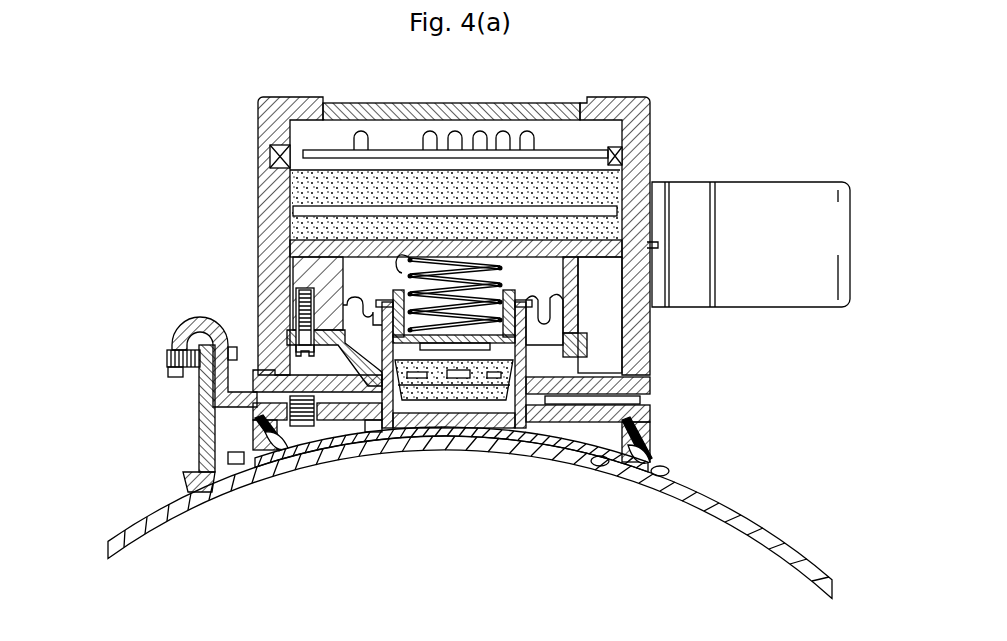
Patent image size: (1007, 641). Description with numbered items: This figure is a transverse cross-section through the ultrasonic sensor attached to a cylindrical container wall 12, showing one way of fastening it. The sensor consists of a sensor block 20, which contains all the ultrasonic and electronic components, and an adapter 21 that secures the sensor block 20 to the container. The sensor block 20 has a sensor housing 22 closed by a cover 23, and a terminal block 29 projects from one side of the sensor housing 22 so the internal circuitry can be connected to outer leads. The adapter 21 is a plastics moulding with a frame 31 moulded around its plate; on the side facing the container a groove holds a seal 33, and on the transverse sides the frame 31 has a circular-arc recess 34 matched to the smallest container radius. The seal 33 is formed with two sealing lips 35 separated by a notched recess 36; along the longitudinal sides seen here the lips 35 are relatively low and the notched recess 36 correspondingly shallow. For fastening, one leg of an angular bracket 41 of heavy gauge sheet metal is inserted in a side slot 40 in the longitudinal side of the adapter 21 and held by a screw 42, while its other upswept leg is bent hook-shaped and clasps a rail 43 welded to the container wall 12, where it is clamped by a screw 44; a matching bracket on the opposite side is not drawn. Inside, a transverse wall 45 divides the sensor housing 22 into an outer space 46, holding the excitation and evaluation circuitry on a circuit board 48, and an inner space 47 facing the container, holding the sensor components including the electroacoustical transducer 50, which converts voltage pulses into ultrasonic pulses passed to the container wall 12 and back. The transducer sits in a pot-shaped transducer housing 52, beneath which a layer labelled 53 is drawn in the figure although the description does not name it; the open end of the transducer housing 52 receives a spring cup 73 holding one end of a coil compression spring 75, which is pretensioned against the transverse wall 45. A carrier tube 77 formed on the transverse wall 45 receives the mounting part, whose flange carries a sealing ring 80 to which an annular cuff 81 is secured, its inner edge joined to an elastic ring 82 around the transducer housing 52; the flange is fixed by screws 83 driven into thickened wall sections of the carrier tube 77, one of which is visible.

The container wall 12 is at (167, 518).
The sensor block 20 is at (250, 110).
The adapter 21 is at (255, 411).
The sensor housing 22 is at (260, 198).
The cover 23 is at (598, 97).
The terminal block 29 is at (790, 195).
The frame 31 is at (257, 417).
The seal 33 is at (255, 452).
The recess 34 is at (372, 452).
The sealing lips 35 is at (233, 462).
The notched recess 36 is at (273, 452).
The side slot 40 is at (333, 426).
The angular bracket 41 is at (200, 318).
The screw 42 is at (307, 430).
The rail 43 is at (200, 383).
The screw 44 is at (175, 357).
The transverse wall 45 is at (383, 245).
The outer space 46 is at (292, 180).
The inner space 47 is at (300, 258).
The circuit board 48 is at (540, 215).
The electroacoustical transducer 50 is at (528, 445).
The transducer housing 52 is at (392, 432).
The felt pad 53 is at (437, 432).
The spring cup 73 is at (478, 432).
The coil compression spring 75 is at (408, 258).
The carrier tube 77 is at (320, 272).
The sealing ring 80 is at (572, 352).
The annular cuff 81 is at (557, 300).
The elastic ring 82 is at (528, 320).
The screws 83 is at (300, 302).